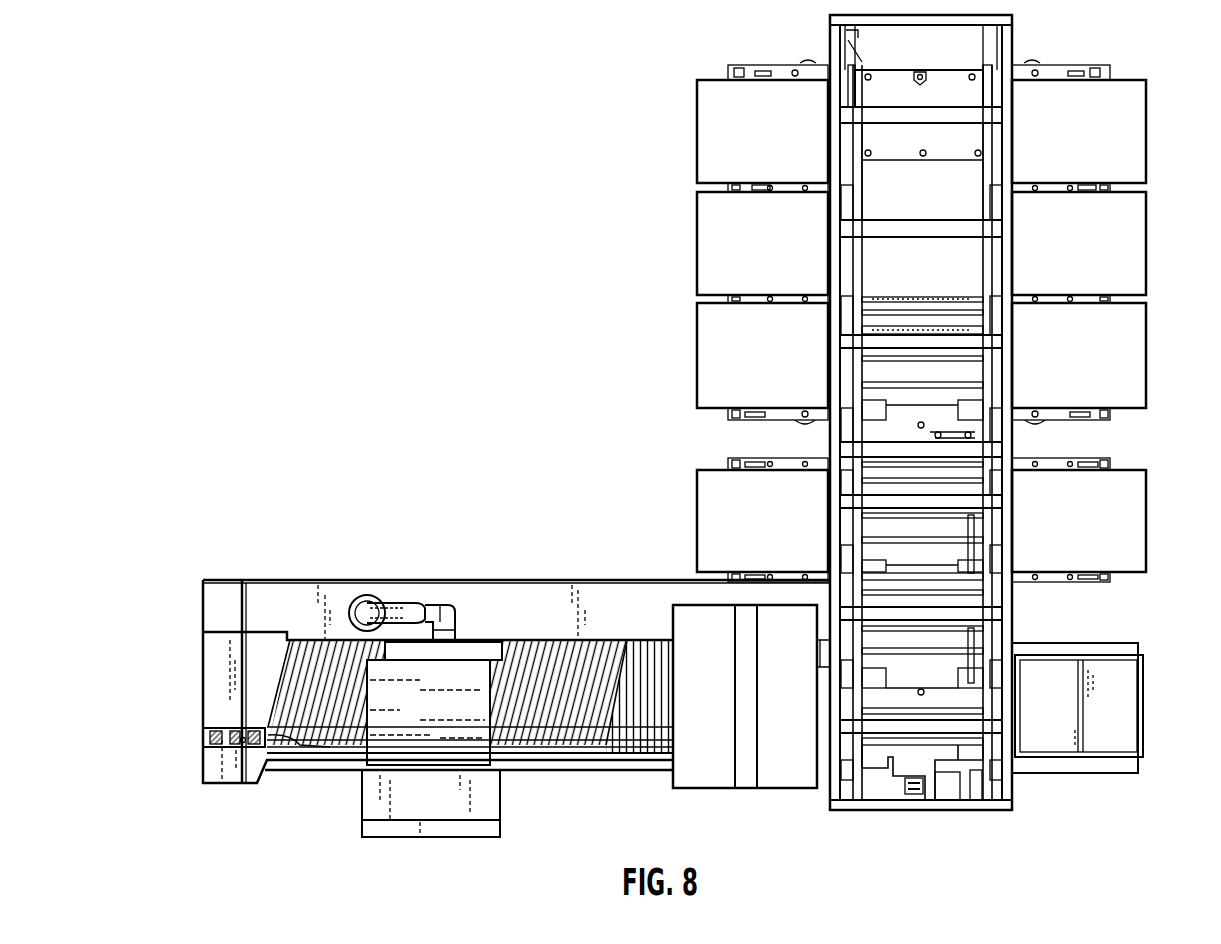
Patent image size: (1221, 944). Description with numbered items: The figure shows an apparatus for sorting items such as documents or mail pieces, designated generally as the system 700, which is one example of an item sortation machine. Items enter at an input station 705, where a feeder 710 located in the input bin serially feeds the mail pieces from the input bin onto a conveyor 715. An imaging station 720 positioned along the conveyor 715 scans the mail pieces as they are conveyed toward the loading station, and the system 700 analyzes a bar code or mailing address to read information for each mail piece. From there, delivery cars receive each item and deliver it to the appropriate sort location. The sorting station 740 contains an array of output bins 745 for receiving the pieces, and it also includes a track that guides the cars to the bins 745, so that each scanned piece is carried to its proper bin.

The system 700 is at (336, 404).
The input station 705 is at (900, 775).
The feeder 710 is at (852, 257).
The conveyor 715 is at (988, 250).
The imaging station 720 is at (715, 790).
The sorting station 740 is at (1039, 31).
The output bins 745 is at (697, 133).